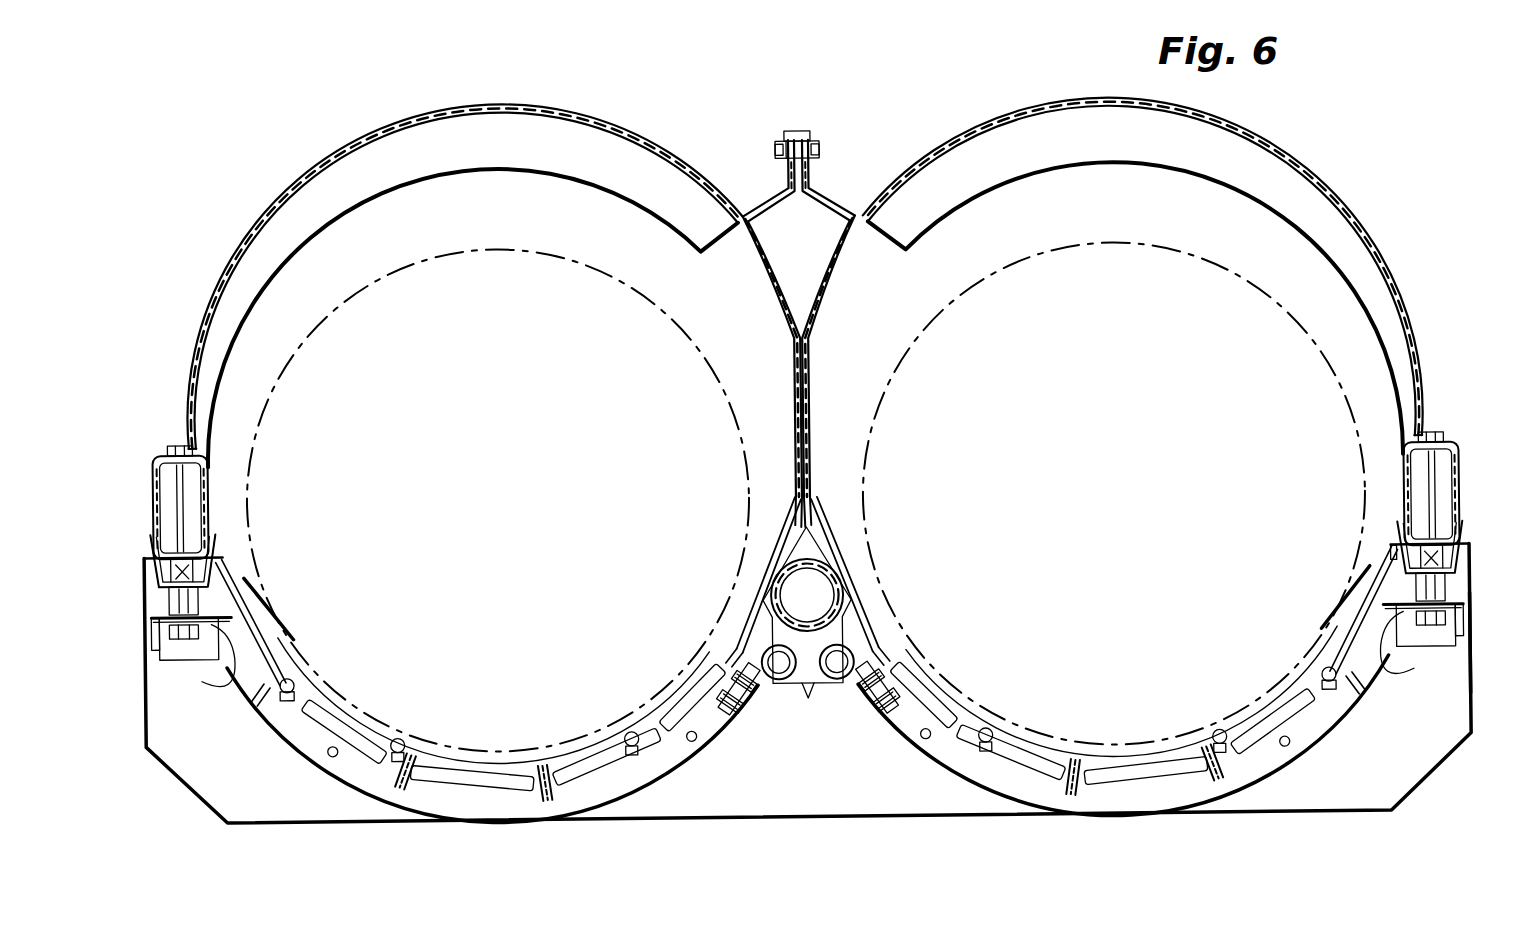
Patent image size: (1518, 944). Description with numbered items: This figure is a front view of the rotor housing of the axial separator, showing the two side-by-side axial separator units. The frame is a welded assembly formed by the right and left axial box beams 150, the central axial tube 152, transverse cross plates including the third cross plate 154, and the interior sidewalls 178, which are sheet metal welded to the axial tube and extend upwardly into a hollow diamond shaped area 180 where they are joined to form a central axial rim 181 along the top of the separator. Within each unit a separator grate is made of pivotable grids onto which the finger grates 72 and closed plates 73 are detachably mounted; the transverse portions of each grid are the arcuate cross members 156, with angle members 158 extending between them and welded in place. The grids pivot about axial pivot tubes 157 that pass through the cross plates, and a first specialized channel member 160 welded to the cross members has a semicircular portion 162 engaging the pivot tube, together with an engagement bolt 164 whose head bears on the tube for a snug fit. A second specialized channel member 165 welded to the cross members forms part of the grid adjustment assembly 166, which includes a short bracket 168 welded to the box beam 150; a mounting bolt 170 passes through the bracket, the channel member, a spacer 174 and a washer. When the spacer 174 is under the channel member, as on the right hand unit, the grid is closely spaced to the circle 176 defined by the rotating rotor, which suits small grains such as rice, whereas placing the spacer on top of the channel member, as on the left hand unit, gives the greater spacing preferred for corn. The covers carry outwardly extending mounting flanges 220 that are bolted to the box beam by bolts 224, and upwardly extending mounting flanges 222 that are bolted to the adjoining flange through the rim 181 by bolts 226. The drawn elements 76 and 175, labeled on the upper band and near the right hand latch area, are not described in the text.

The finger grates 72 is at (362, 792).
The closed plates 73 is at (268, 636).
The band 76 is at (474, 143).
The axial box beams 150 is at (210, 500).
The central axial tube 152 is at (842, 542).
The third cross plate 154 is at (222, 790).
The arcuate cross members 156 is at (594, 800).
The axial pivot tubes 157 is at (806, 698).
The angle members 158 is at (684, 760).
The first specialized channel member 160 is at (734, 672).
The semicircular portion 162 is at (760, 584).
The engagement bolt 164 is at (836, 684).
The second specialized channel member 165 is at (218, 660).
The grid adjustment assembly 166 is at (232, 548).
The bracket 168 is at (254, 580).
The mounting bolt 170 is at (1376, 572).
The spacer 174 is at (1466, 690).
The block 175 is at (1430, 602).
The circle defined by the rotating rotor 176 is at (612, 270).
The interior sidewalls 178 is at (796, 490).
The diamond shaped area 180 is at (775, 256).
The central axial rim 181 is at (798, 130).
The outwardly extending mounting flanges 220 is at (160, 445).
The upwardly extending mounting flanges 222 is at (778, 148).
The bolts 224 is at (190, 435).
The bolts 226 is at (824, 150).